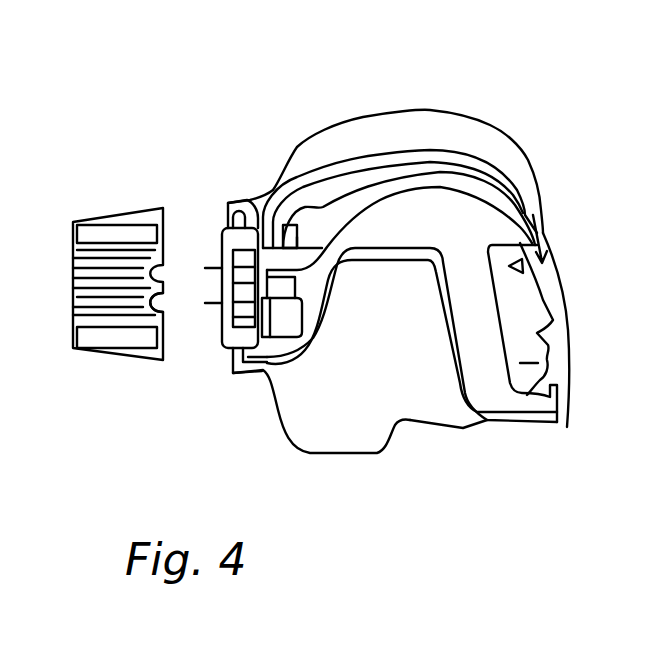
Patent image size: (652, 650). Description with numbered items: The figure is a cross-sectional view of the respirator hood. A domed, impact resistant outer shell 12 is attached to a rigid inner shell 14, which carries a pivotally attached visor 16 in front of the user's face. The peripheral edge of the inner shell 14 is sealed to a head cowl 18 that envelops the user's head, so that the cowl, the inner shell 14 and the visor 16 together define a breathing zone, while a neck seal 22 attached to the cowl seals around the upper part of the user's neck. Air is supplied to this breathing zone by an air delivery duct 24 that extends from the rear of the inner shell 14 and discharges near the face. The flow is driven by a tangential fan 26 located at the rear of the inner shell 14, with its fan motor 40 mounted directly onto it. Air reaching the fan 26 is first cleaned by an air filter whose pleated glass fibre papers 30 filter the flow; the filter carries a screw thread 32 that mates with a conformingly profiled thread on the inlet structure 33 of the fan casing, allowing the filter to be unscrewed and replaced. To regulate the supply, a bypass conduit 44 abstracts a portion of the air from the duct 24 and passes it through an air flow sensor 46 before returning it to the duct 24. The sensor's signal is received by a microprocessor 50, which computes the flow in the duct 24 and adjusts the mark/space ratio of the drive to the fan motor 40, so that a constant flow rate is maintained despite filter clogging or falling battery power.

The outer shell 12 is at (530, 163).
The inner shell 14 is at (507, 402).
The visor 16 is at (570, 282).
The head cowl 18 is at (432, 413).
The neck seal 22 is at (358, 445).
The air delivery duct 24 is at (430, 173).
The fan 26 is at (243, 250).
The pleated glass fibre papers 30 is at (103, 230).
The screw thread 32 is at (158, 305).
The inlet structure 33 is at (207, 268).
The fan motor 40 is at (290, 288).
The bypass conduit 44 is at (310, 203).
The air flow sensor 46 is at (285, 237).
The microprocessor 50 is at (280, 328).